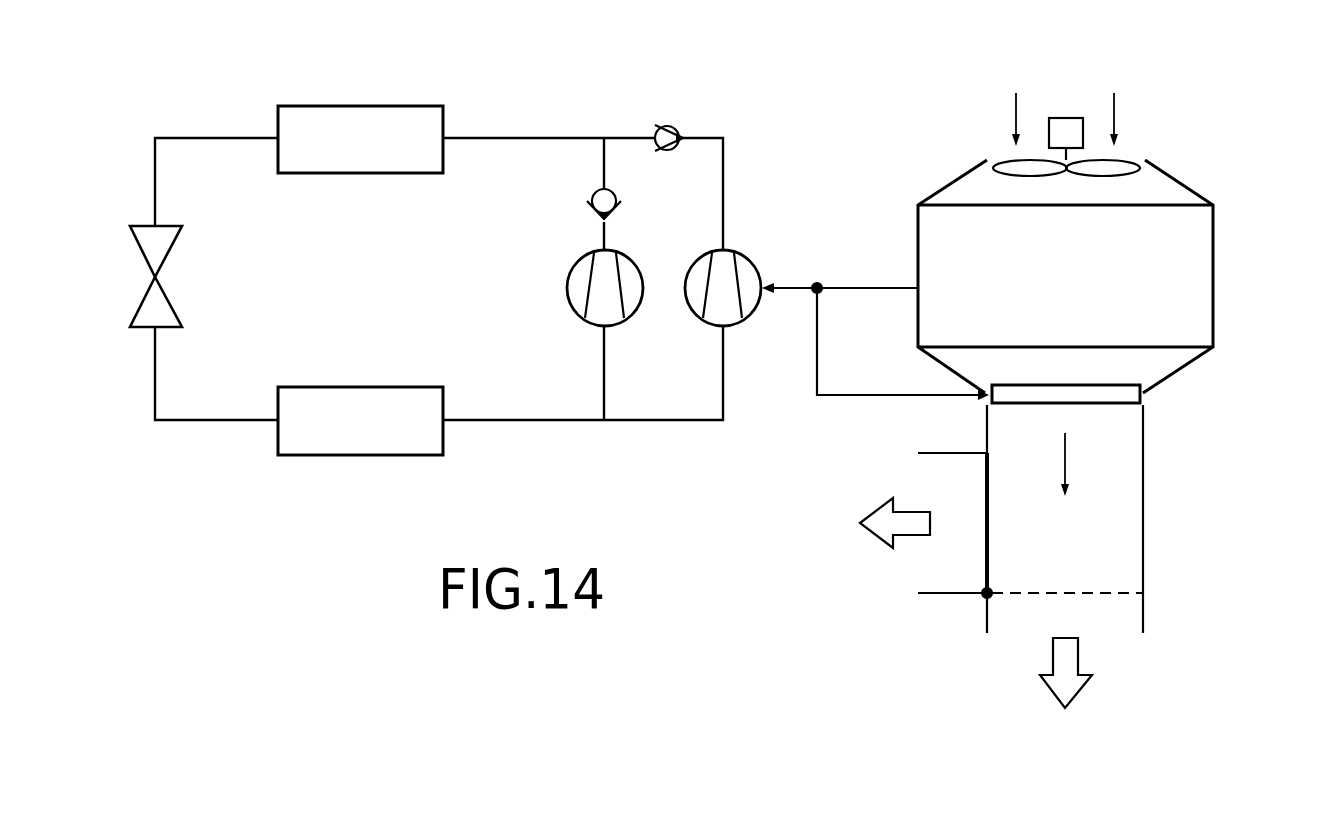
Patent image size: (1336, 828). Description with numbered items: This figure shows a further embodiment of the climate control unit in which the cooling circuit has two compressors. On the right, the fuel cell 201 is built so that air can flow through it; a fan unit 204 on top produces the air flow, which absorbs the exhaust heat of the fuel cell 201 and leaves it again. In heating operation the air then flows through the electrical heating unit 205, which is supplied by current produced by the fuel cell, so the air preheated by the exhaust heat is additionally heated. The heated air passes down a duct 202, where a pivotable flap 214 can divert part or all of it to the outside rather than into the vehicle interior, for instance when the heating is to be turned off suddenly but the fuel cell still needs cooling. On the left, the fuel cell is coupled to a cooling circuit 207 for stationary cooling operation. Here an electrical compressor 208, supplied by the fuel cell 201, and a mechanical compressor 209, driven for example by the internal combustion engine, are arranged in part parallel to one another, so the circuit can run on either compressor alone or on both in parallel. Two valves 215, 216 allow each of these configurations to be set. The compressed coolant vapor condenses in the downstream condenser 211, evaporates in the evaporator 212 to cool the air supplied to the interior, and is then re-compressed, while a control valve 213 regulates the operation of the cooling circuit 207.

The fuel cell 201 is at (1215, 271).
The duct 202 is at (1214, 500).
The fan unit 204 is at (1127, 158).
The electrical heating unit 205 is at (1086, 405).
The cooling circuit 207 is at (599, 105).
The electrical compressor 208 is at (750, 258).
The mechanical compressor 209 is at (571, 272).
The condenser 211 is at (374, 105).
The evaporator 212 is at (370, 387).
The control valve 213 is at (145, 283).
The flap 214 is at (985, 486).
The valve 215 is at (673, 128).
The valve 216 is at (594, 196).